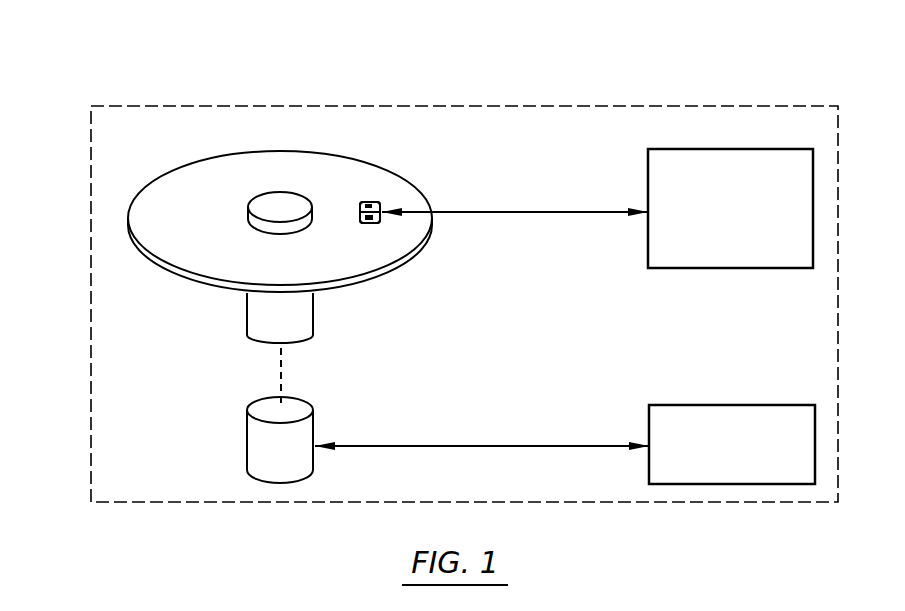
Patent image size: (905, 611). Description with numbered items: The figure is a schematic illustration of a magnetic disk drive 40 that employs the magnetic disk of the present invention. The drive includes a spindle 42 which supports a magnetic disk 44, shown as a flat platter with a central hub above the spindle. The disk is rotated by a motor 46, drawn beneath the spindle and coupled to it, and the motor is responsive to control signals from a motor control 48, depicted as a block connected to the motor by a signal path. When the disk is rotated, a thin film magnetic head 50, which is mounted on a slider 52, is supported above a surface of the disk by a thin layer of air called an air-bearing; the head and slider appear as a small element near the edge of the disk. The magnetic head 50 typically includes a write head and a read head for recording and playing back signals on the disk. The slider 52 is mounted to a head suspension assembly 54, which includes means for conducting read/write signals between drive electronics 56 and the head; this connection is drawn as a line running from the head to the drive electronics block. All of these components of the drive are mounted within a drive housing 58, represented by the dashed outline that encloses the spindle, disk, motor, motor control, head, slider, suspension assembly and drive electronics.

The magnetic disk drive 40 is at (492, 82).
The spindle 42 is at (247, 310).
The magnetic disk 44 is at (190, 182).
The motor 46 is at (247, 446).
The motor control 48 is at (740, 405).
The thin film magnetic head 50 is at (372, 223).
The slider 52 is at (372, 202).
The head suspension assembly 54 is at (510, 215).
The drive electronics 56 is at (738, 149).
The drive housing 58 is at (88, 303).